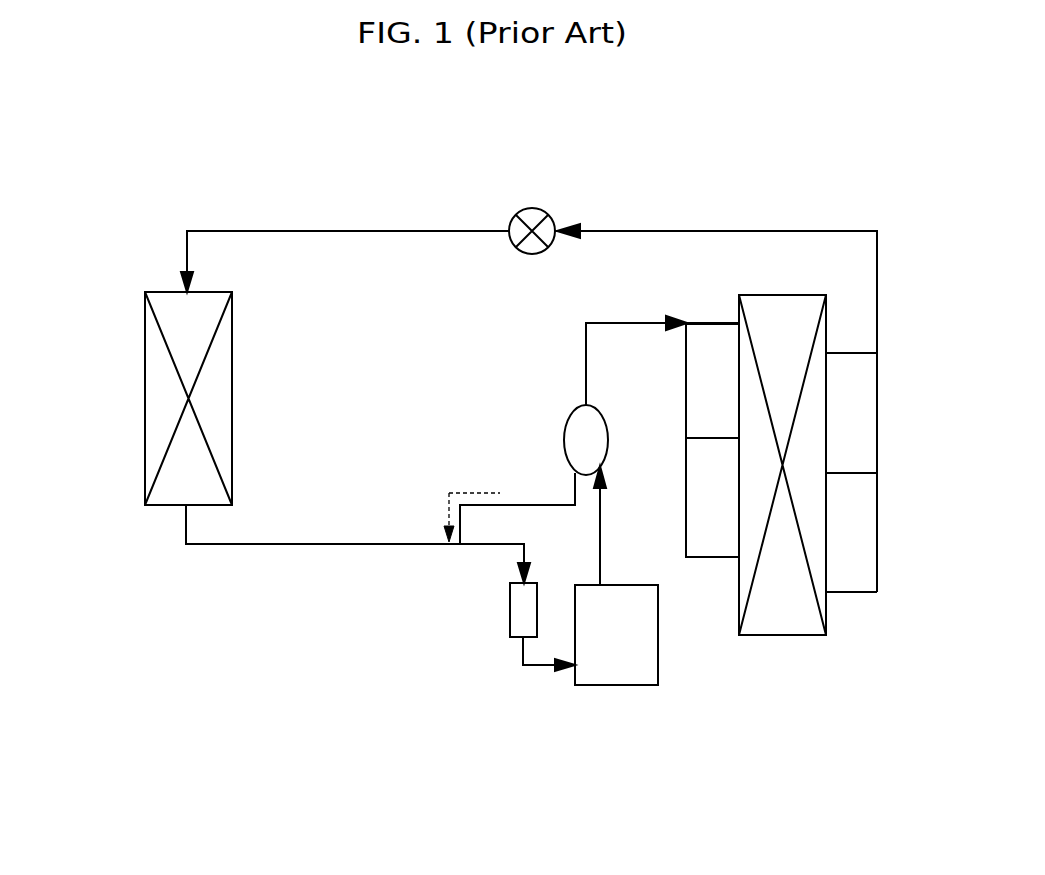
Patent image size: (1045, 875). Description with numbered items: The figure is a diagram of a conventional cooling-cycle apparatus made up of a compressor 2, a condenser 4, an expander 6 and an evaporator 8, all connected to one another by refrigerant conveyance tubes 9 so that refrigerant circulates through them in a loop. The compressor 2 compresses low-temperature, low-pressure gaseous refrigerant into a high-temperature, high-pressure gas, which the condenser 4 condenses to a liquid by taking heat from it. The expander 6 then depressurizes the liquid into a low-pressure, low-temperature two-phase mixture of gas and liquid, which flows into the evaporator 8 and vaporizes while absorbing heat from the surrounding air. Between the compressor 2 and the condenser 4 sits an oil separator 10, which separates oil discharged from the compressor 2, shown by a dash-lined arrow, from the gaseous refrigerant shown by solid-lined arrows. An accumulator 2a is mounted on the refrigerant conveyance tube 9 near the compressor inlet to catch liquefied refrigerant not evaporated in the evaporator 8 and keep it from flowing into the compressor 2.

The compressor 2 is at (628, 676).
The accumulator 2a is at (510, 627).
The condenser 4 is at (815, 557).
The expander 6 is at (537, 209).
The evaporator 8 is at (145, 400).
The refrigerant conveyance tubes 9 is at (367, 230).
The oil separator 10 is at (560, 422).